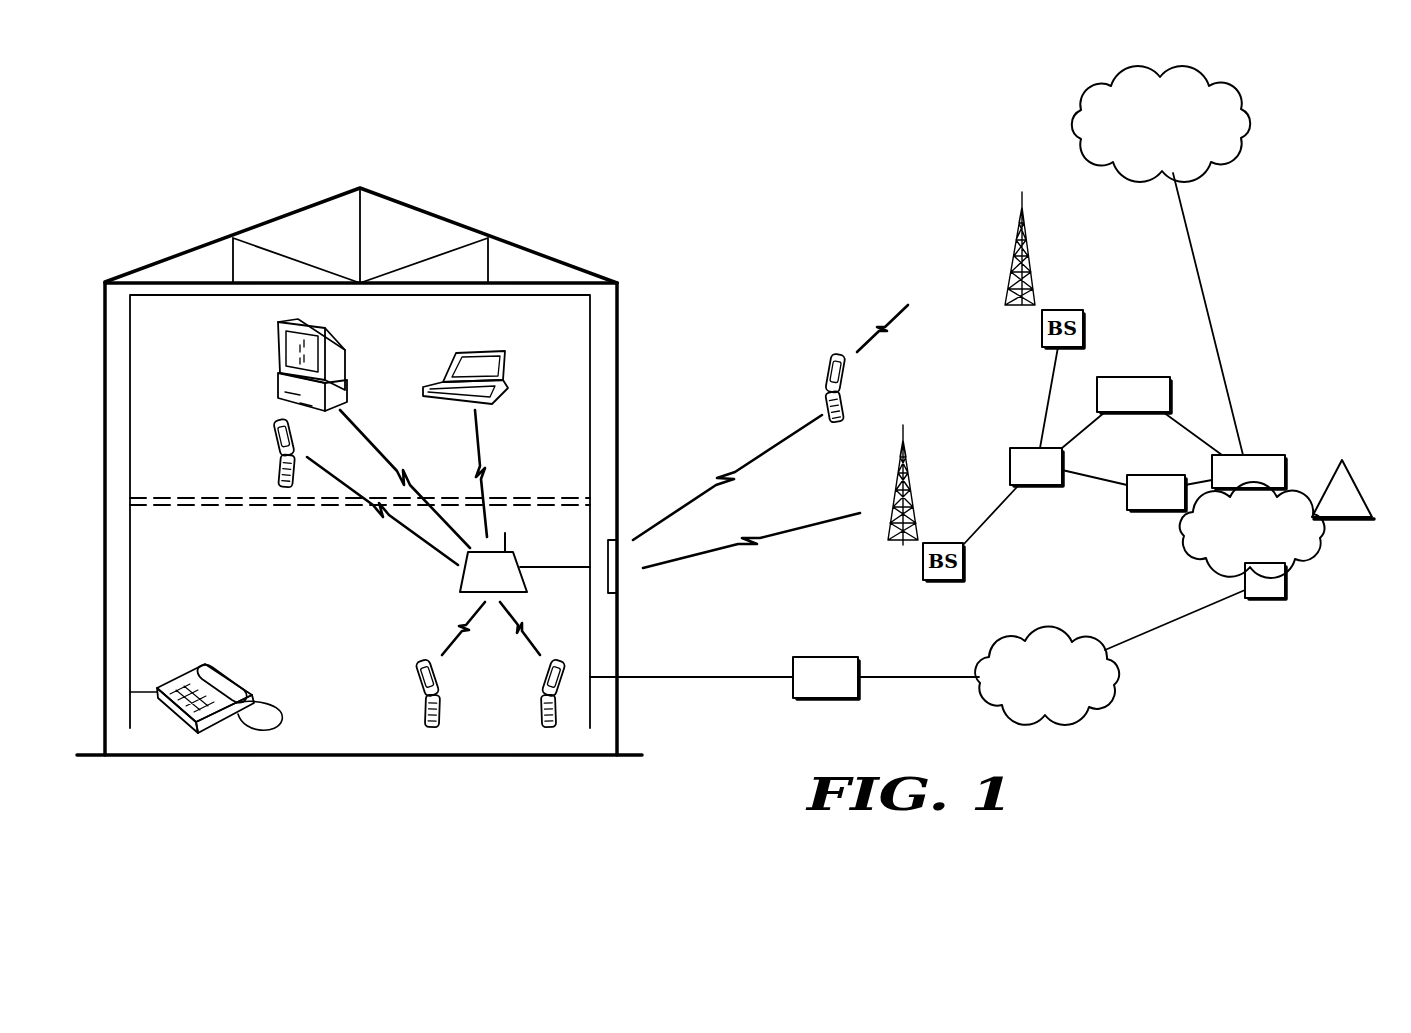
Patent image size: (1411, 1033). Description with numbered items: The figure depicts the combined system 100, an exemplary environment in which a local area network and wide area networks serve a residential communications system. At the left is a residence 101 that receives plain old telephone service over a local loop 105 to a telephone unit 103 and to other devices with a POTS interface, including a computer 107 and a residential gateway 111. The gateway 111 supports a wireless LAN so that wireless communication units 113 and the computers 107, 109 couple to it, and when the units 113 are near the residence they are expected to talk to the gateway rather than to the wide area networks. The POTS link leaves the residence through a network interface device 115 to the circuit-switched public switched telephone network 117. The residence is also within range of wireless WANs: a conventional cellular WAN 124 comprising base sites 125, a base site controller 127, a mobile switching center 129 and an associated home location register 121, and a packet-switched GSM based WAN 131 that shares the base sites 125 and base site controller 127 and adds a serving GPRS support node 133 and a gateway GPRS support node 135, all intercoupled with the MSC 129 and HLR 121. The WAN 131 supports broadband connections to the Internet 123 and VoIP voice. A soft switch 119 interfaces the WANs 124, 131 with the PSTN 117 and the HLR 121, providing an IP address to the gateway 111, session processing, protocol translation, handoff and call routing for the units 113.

The combined system 100 is at (1078, 795).
The residence 101 is at (440, 213).
The telephone unit 103 is at (214, 665).
The local loop 105 is at (130, 597).
The computer 107 is at (278, 341).
The computer 109 is at (485, 350).
The residential gateway 111 is at (460, 584).
The wireless communication unit 113 is at (276, 426).
The network interface device 115 is at (823, 657).
The public switched telephone network 117 is at (1082, 637).
The soft switch 119 is at (1262, 599).
The home location register 121 is at (1342, 460).
The Internet 123 is at (1077, 112).
The cellular WAN 124 is at (1103, 497).
The base site 125 is at (1012, 254).
The base site controller 127 is at (1010, 468).
The mobile switching center 129 is at (1157, 475).
The GSM based WAN 131 is at (1322, 555).
The serving GPRS support node (SGSN) 133 is at (1132, 377).
The gateway GPRS support node (GGSN) 135 is at (1268, 455).